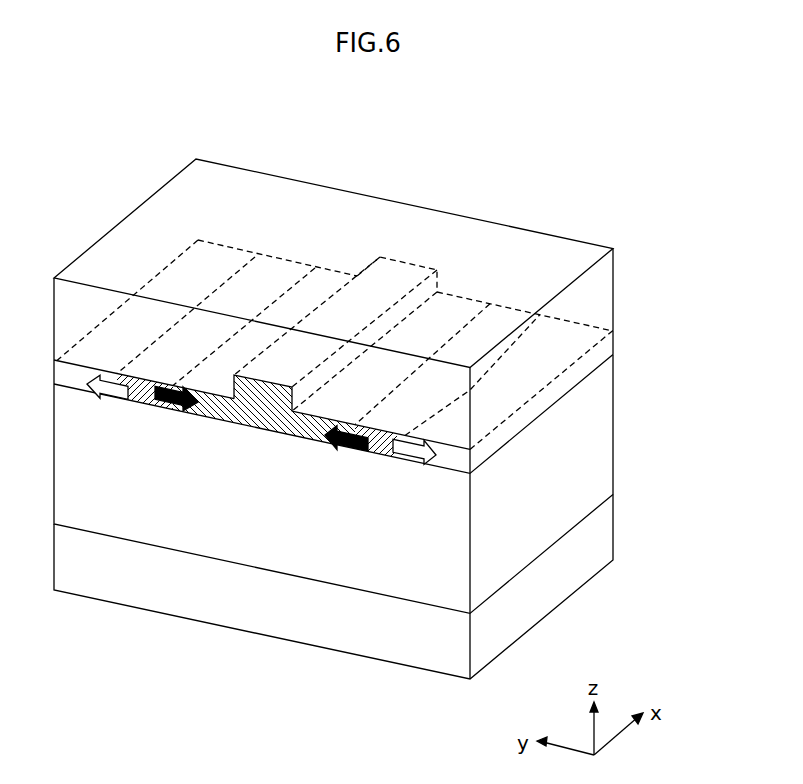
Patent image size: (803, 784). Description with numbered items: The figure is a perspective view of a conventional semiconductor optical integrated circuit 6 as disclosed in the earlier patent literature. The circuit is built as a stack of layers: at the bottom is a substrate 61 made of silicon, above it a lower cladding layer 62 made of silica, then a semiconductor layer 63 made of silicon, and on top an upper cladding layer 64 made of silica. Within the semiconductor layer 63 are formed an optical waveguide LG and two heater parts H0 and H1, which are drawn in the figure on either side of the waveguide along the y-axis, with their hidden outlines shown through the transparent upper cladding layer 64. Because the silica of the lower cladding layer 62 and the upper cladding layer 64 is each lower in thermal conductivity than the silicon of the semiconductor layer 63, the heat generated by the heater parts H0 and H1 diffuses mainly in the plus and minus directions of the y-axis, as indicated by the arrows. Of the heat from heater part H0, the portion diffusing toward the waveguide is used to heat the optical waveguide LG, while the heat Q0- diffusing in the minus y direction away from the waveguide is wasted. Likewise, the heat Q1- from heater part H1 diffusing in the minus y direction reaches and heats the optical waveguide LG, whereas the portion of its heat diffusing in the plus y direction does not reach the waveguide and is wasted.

The semiconductor optical integrated circuit 6 is at (670, 221).
The substrate 61 is at (613, 528).
The lower cladding layer 62 is at (613, 434).
The semiconductor layer 63 is at (361, 311).
The upper cladding layer 64 is at (613, 294).
The heater part H1 is at (278, 258).
The optical waveguide LG is at (410, 264).
The heater part H0 is at (525, 312).
The heat Q1- is at (176, 413).
The heat Q0- is at (415, 463).